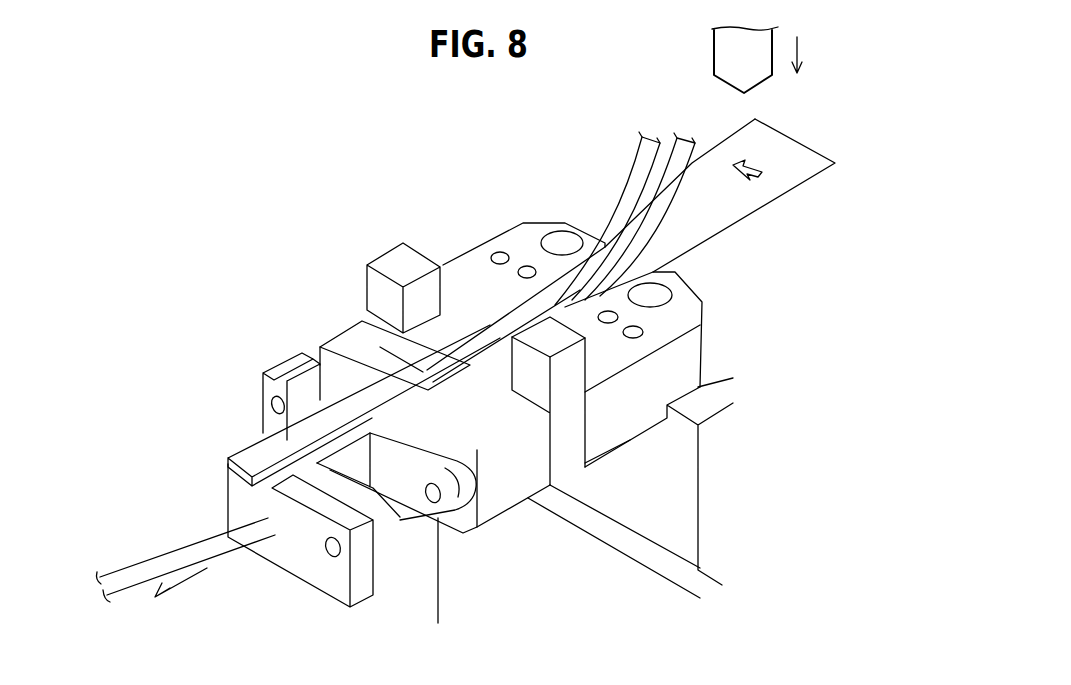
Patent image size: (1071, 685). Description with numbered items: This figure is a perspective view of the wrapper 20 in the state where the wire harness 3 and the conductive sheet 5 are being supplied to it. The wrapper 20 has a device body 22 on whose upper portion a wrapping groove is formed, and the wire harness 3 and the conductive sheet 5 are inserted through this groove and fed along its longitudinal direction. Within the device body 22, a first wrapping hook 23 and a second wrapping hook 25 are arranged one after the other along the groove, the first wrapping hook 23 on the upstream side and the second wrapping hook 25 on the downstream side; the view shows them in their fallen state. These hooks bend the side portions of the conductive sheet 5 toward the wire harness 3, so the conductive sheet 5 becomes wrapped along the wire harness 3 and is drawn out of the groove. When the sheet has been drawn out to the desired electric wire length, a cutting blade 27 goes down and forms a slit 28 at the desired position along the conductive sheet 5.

The wire harness 3 is at (630, 191).
The conductive sheet 5 is at (698, 227).
The wrapper 20 is at (447, 231).
The device body 22 is at (425, 527).
The first wrapping hook 23 is at (345, 345).
The second wrapping hook 25 is at (298, 467).
The cutting blade 27 is at (722, 50).
The slit 28 is at (762, 175).